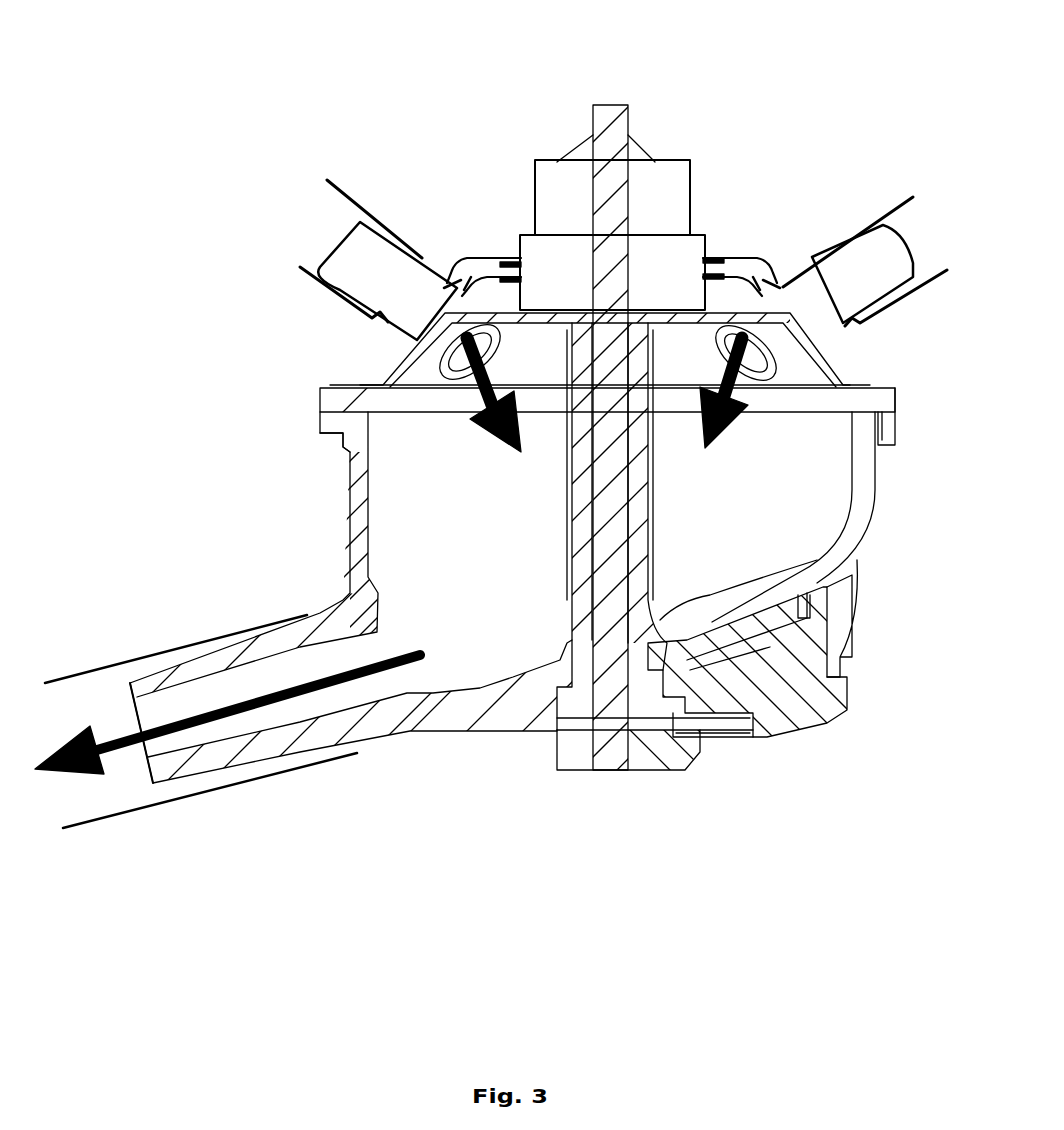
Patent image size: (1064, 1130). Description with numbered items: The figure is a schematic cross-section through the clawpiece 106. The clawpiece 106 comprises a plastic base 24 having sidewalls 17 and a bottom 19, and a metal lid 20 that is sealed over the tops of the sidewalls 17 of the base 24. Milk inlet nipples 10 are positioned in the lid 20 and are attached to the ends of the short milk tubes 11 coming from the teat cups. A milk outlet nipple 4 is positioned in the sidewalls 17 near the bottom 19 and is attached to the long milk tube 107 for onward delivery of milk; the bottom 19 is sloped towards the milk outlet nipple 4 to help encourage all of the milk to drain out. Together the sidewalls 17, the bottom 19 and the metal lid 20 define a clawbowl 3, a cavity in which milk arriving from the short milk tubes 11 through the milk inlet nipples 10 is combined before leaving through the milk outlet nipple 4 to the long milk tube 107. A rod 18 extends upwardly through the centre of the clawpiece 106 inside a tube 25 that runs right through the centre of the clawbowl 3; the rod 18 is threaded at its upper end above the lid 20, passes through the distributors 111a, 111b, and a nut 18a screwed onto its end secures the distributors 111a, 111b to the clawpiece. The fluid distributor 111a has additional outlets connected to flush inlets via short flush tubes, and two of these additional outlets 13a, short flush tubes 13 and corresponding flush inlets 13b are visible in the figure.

The rod 18 is at (616, 103).
The nut 18a is at (640, 135).
The distributor 111b is at (545, 158).
The fluid distributor 111a is at (706, 236).
The short milk tube 11 is at (342, 190).
The milk inlet nipple 10 is at (374, 236).
The short flush tube 13 is at (472, 268).
The additional outlet 13a is at (507, 262).
The flush inlet 13b is at (452, 290).
The clawpiece 106 is at (183, 316).
The metal lid 20 is at (358, 384).
The plastic base 24 is at (353, 462).
The sidewalls 17 is at (358, 503).
The clawbowl 3 is at (468, 556).
The tube 25 is at (640, 478).
The bottom 19 is at (820, 587).
The milk outlet nipple 4 is at (207, 770).
The long milk tube 107 is at (120, 815).